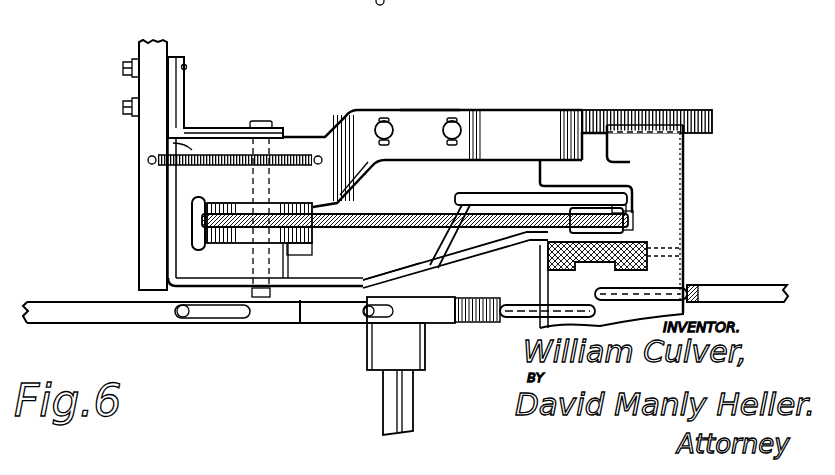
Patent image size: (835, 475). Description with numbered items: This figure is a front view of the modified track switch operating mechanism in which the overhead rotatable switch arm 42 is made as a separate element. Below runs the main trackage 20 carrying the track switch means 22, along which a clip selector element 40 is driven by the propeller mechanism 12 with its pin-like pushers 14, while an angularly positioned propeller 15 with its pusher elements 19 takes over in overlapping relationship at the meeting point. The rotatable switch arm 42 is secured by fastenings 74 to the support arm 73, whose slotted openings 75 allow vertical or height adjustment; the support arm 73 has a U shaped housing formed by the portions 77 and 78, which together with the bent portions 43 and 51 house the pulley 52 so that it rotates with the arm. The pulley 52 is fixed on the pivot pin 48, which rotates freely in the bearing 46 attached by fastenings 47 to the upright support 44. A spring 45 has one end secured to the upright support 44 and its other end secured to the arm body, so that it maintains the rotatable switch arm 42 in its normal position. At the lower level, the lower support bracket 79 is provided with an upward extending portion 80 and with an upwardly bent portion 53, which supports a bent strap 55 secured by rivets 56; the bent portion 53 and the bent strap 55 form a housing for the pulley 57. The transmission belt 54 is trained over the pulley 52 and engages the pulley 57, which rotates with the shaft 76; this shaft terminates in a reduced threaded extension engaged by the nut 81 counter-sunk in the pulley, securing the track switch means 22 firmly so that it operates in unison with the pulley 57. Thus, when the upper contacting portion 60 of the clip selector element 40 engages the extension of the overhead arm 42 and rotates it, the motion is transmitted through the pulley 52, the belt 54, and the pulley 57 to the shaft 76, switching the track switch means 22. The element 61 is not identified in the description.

The propeller mechanism 12 is at (700, 288).
The pushers 14 is at (594, 293).
The propeller 15 is at (170, 315).
The pusher elements 19 is at (512, 312).
The main trackage 20 is at (633, 250).
The track switch means 22 is at (640, 273).
The clip selector element 40 is at (685, 204).
The rotatable switch arm 42 is at (593, 110).
The V shaped housing portion 43 is at (280, 185).
The upright support 44 is at (152, 40).
The spring 45 is at (163, 143).
The bearing 46 is at (186, 88).
The fastenings 47 is at (123, 106).
The pivot pin 48 is at (262, 120).
The V shaped housing portion 51 is at (222, 248).
The pulley 52 is at (332, 207).
The upwardly bent portion 53 is at (456, 215).
The transmission belt 54 is at (633, 222).
The bent strap 55 is at (455, 264).
The rivets 56 is at (413, 267).
The pulley 57 is at (630, 215).
The upper contacting portion 60 is at (665, 146).
The bar 61 is at (548, 199).
The support arm 73 is at (422, 118).
The fastenings 74 is at (386, 121).
The slotted openings 75 is at (453, 121).
The shaft 76 is at (600, 190).
The U shaped housing portion 77 is at (293, 150).
The U shaped housing portion 78 is at (240, 257).
The lower support bracket 79 is at (335, 288).
The upward extending portion 80 is at (173, 183).
The nut 81 is at (536, 255).